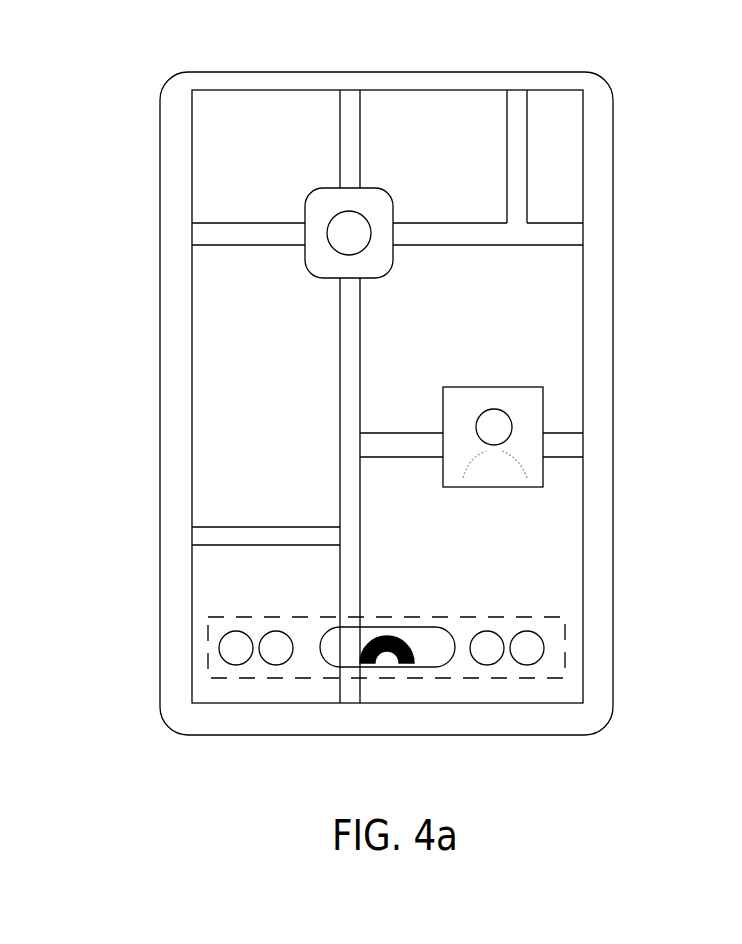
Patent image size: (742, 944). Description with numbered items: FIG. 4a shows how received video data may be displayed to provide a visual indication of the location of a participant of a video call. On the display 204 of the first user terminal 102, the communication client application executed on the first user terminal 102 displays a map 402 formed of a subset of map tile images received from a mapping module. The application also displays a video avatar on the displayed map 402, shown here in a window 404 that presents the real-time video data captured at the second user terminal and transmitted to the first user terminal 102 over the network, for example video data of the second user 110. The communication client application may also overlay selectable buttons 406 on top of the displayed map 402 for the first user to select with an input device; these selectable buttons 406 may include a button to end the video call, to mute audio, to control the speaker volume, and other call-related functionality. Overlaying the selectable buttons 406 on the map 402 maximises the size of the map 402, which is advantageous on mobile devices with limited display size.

The first user terminal 102 is at (613, 163).
The display 204 is at (583, 275).
The map 402 is at (213, 138).
The window 404 is at (551, 417).
The second user 110 is at (490, 410).
The selectable buttons 406 is at (565, 638).